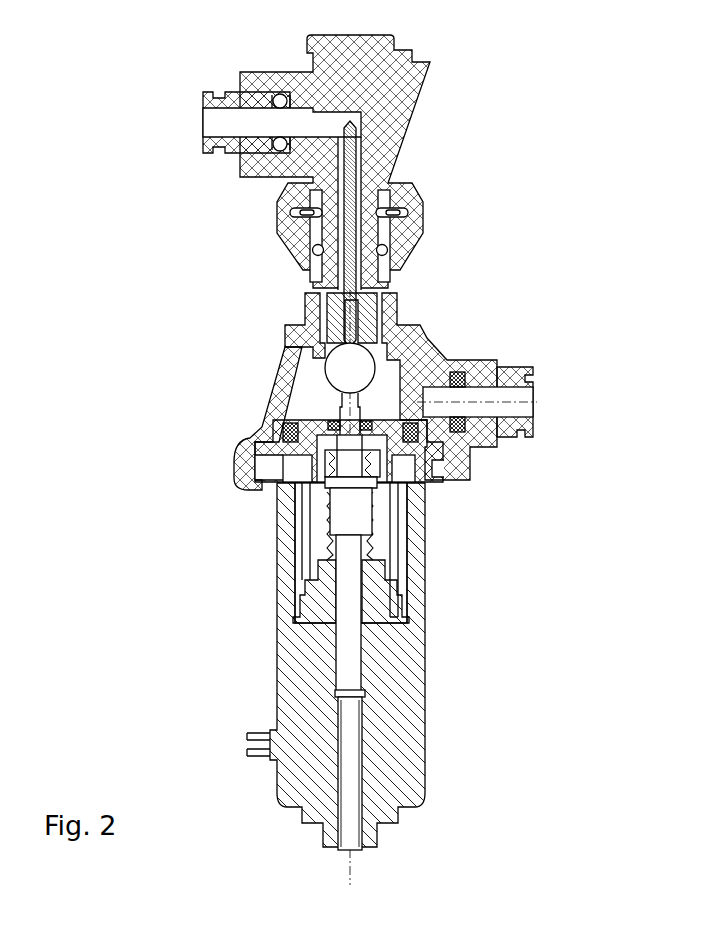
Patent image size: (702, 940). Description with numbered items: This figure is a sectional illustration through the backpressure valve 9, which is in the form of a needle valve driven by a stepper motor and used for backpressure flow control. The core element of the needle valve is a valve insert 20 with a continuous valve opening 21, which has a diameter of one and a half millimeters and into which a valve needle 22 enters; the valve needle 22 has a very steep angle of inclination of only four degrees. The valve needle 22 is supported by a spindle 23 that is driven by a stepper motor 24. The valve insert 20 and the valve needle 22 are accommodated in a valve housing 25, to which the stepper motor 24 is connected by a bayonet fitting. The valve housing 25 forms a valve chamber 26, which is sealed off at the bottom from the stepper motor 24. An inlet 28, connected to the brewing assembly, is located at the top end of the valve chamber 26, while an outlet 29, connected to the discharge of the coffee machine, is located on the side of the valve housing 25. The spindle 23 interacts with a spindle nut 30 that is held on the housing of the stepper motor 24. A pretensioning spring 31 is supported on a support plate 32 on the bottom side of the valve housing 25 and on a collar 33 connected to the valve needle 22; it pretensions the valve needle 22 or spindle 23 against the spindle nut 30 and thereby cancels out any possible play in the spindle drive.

The backpressure valve 9 is at (513, 169).
The valve insert 20 is at (368, 315).
The valve opening 21 is at (352, 352).
The valve needle 22 is at (345, 370).
The spindle 23 is at (353, 800).
The stepper motor 24 is at (425, 738).
The valve housing 25 is at (285, 333).
The valve chamber 26 is at (287, 390).
The inlet 28 is at (310, 120).
The outlet 29 is at (432, 398).
The spindle nut 30 is at (358, 655).
The pretensioning spring 31 is at (388, 470).
The support plate 32 is at (392, 453).
The collar 33 is at (330, 482).